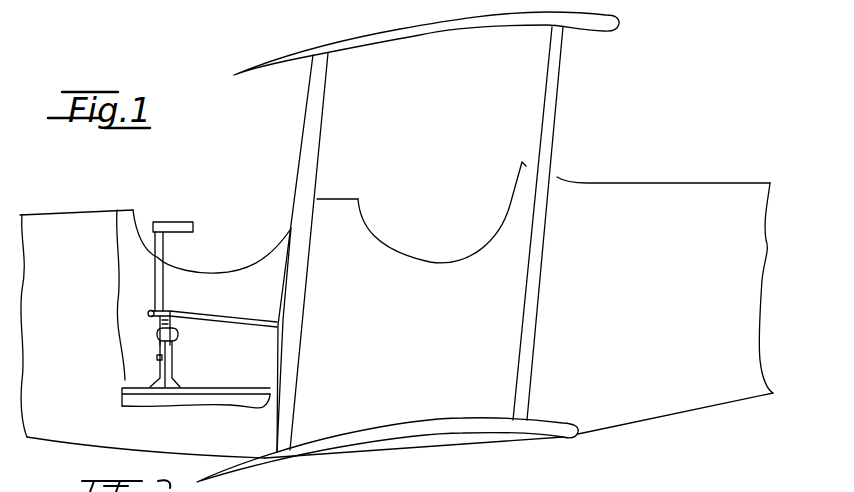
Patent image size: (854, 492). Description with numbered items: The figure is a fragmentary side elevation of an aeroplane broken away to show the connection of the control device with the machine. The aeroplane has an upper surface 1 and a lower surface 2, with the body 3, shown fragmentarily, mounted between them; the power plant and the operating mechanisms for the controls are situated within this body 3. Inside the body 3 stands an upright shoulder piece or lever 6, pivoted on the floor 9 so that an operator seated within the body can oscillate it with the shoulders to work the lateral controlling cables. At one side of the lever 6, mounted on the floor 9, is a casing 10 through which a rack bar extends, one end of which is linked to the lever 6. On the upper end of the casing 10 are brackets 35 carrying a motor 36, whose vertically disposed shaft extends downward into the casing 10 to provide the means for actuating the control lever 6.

The upper surface 1 is at (437, 28).
The lower surface 2 is at (470, 408).
The body 3 is at (396, 242).
The upright shoulder piece or lever 6 is at (160, 297).
The floor 9 is at (252, 388).
The casing 10 is at (160, 367).
The brackets 35 is at (156, 345).
The motor 36 is at (178, 335).